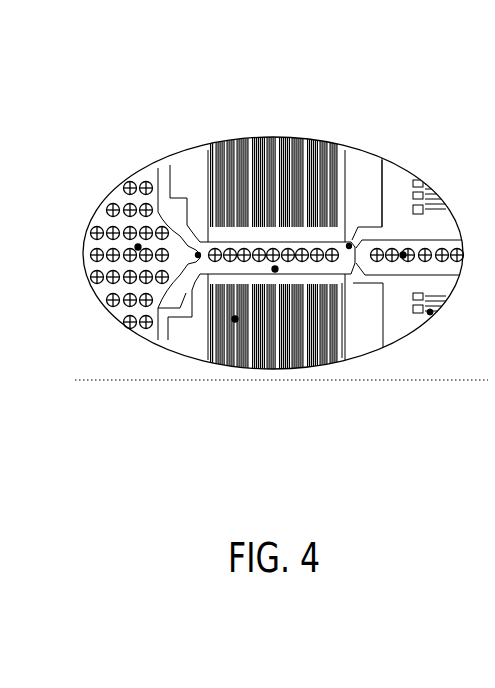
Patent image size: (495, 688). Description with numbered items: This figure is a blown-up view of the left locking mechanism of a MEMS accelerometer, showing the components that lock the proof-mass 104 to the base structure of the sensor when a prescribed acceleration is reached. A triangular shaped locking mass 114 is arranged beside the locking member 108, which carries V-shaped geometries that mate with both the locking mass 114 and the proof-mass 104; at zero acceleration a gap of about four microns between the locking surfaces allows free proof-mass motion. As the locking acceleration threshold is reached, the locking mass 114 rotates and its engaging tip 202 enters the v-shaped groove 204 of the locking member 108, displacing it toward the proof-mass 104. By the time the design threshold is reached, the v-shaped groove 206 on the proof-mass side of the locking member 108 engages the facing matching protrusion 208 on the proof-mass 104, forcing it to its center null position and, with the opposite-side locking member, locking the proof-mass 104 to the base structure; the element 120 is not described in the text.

The proof-mass 104 is at (403, 255).
The locking member 108 is at (333, 358).
The locking mass 114 is at (122, 318).
The electrode 120 is at (210, 362).
The engaging tip 202 is at (187, 257).
The v-shaped groove 204 is at (198, 253).
The v-shaped groove 206 is at (349, 245).
The matching protrusion 208 is at (355, 257).